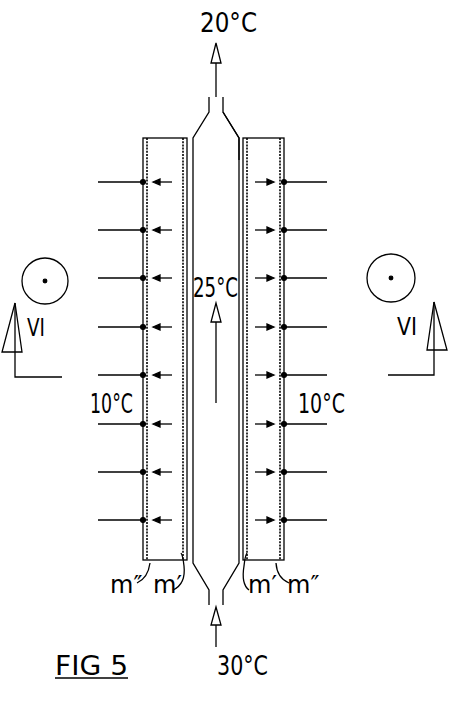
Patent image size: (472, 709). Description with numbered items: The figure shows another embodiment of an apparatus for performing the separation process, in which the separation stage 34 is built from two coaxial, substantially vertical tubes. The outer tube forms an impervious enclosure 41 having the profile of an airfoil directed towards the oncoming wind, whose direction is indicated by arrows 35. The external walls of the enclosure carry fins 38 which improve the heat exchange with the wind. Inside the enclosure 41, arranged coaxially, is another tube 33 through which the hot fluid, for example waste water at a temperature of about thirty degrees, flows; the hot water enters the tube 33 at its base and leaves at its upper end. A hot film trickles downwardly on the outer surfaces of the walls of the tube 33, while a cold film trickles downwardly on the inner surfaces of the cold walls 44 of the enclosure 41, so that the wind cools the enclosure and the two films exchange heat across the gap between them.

The tube 33 is at (216, 351).
The separation stage 34 is at (246, 124).
The impervious enclosure 41 is at (272, 150).
The cold walls 44 is at (143, 205).
The fins 38 is at (104, 182).
The arrows 35 is at (48, 262).